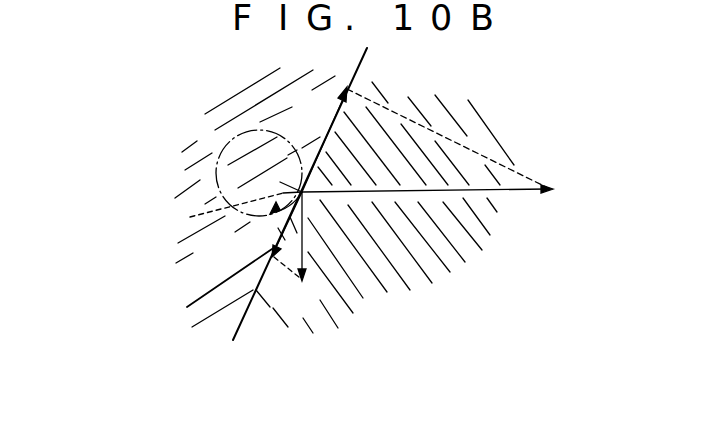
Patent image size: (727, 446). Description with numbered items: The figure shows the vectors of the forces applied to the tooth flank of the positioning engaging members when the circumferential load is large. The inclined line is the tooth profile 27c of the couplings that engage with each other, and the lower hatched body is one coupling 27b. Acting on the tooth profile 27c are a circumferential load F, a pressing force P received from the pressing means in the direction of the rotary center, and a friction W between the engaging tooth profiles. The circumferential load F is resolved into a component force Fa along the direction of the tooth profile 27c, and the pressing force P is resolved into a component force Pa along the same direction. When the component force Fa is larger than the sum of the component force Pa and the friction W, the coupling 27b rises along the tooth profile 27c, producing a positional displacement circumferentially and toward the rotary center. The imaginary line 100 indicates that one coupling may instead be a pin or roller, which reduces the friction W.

The imaginary line 100 is at (223, 152).
The coupling 27b is at (184, 281).
The tooth profile 27c is at (363, 62).
The circumferential load F is at (437, 148).
The component force of the circumferential load Fa is at (325, 136).
The pressing force P is at (295, 250).
The component force of the pressing force Pa is at (277, 238).
The friction W is at (231, 207).